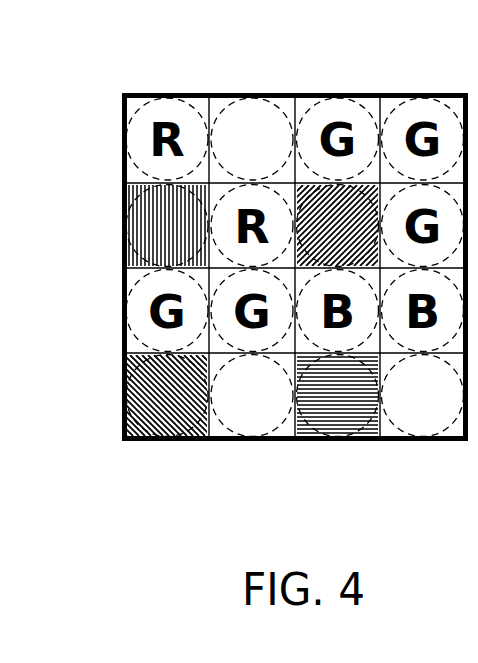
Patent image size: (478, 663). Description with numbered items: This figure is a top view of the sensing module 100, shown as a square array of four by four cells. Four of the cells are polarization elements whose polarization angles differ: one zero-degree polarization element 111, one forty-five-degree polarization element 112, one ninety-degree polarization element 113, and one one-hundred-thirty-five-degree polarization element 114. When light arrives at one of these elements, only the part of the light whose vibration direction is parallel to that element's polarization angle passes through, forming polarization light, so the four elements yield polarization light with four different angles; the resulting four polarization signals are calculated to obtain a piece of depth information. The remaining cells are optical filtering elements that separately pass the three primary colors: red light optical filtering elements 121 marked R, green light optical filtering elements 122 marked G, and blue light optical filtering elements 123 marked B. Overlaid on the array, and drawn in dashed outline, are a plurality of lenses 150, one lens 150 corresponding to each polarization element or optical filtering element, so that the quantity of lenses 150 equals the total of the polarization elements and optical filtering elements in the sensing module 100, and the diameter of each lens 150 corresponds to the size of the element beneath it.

The sensing module 100 is at (128, 51).
The lens 150 is at (202, 95).
The red light optical filtering element 121 is at (262, 94).
The green light optical filtering element 122 is at (252, 441).
The blue light optical filtering element 123 is at (425, 441).
The 0° polarization element 111 is at (122, 232).
The 45° polarization element 112 is at (362, 195).
The 90° polarization element 113 is at (337, 441).
The 135° polarization element 114 is at (122, 393).